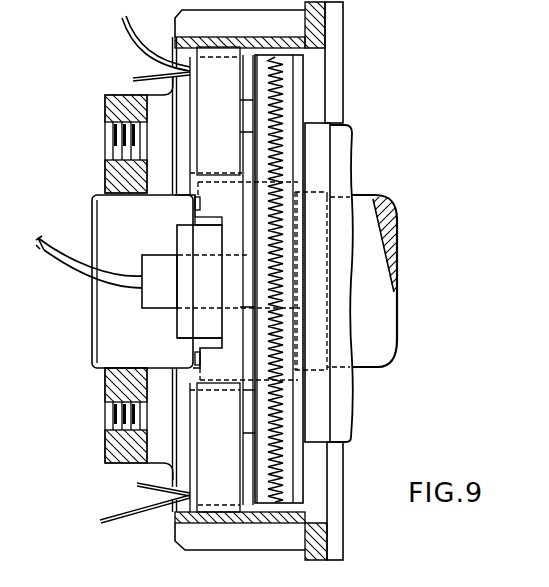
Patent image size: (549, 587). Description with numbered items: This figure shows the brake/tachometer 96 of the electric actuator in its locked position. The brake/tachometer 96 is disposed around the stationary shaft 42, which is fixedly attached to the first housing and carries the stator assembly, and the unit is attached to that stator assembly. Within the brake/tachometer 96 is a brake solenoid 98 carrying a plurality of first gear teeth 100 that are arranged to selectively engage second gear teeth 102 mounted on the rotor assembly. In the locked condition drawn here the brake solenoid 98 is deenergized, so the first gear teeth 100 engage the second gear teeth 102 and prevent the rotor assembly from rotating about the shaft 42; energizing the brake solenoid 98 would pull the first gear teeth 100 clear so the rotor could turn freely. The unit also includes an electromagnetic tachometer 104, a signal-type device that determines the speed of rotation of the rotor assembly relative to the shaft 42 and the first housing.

The brake/tachometer 96 is at (386, 136).
The brake solenoid 98 is at (229, 113).
The first gear teeth 100 is at (262, 503).
The second gear teeth 102 is at (286, 494).
The electromagnetic tachometer 104 is at (156, 262).
The stationary shaft 42 is at (378, 312).